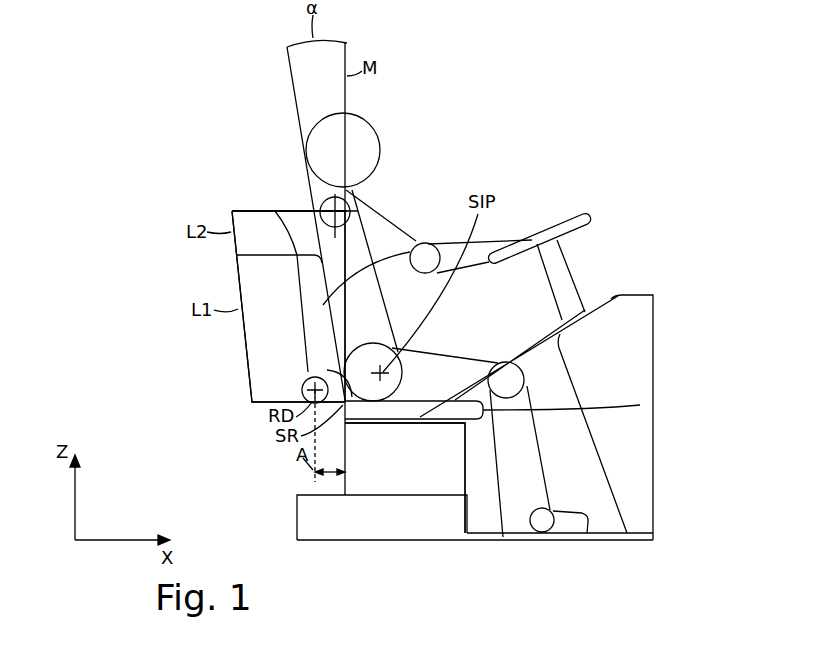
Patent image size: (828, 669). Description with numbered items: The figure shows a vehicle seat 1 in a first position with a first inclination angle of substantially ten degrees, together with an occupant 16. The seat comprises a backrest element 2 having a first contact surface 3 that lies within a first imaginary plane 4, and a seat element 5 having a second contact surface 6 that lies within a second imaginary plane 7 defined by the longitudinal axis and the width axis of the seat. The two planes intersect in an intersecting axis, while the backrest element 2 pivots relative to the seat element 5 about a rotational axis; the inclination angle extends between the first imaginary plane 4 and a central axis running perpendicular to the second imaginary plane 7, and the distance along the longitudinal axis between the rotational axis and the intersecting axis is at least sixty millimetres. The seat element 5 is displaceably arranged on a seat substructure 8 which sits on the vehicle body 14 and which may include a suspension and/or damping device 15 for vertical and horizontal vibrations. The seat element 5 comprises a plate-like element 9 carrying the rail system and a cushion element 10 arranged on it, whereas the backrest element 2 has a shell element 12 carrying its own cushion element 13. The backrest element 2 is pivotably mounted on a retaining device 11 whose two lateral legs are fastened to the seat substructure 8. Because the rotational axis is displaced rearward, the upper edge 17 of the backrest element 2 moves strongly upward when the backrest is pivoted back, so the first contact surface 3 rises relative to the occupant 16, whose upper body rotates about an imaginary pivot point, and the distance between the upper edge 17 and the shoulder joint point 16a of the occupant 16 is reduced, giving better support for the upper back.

The vehicle seat 1 is at (174, 82).
The backrest element 2 is at (340, 250).
The first contact surface 3 is at (340, 250).
The first imaginary plane 4 is at (340, 250).
The seat element 5 is at (584, 308).
The second contact surface 6 is at (584, 308).
The second imaginary plane 7 is at (584, 308).
The seat substructure 8 is at (503, 540).
The plate-like element 9 is at (640, 405).
The cushion element 10 is at (572, 298).
The retaining device 11 is at (313, 370).
The shell element 12 is at (308, 334).
The cushion element 13 is at (412, 241).
The vehicle body 14 is at (440, 533).
The suspension and/or damping device 15 is at (378, 490).
The occupant 16 is at (383, 180).
The shoulder joint point 16a is at (313, 203).
The upper edge 17 is at (283, 220).